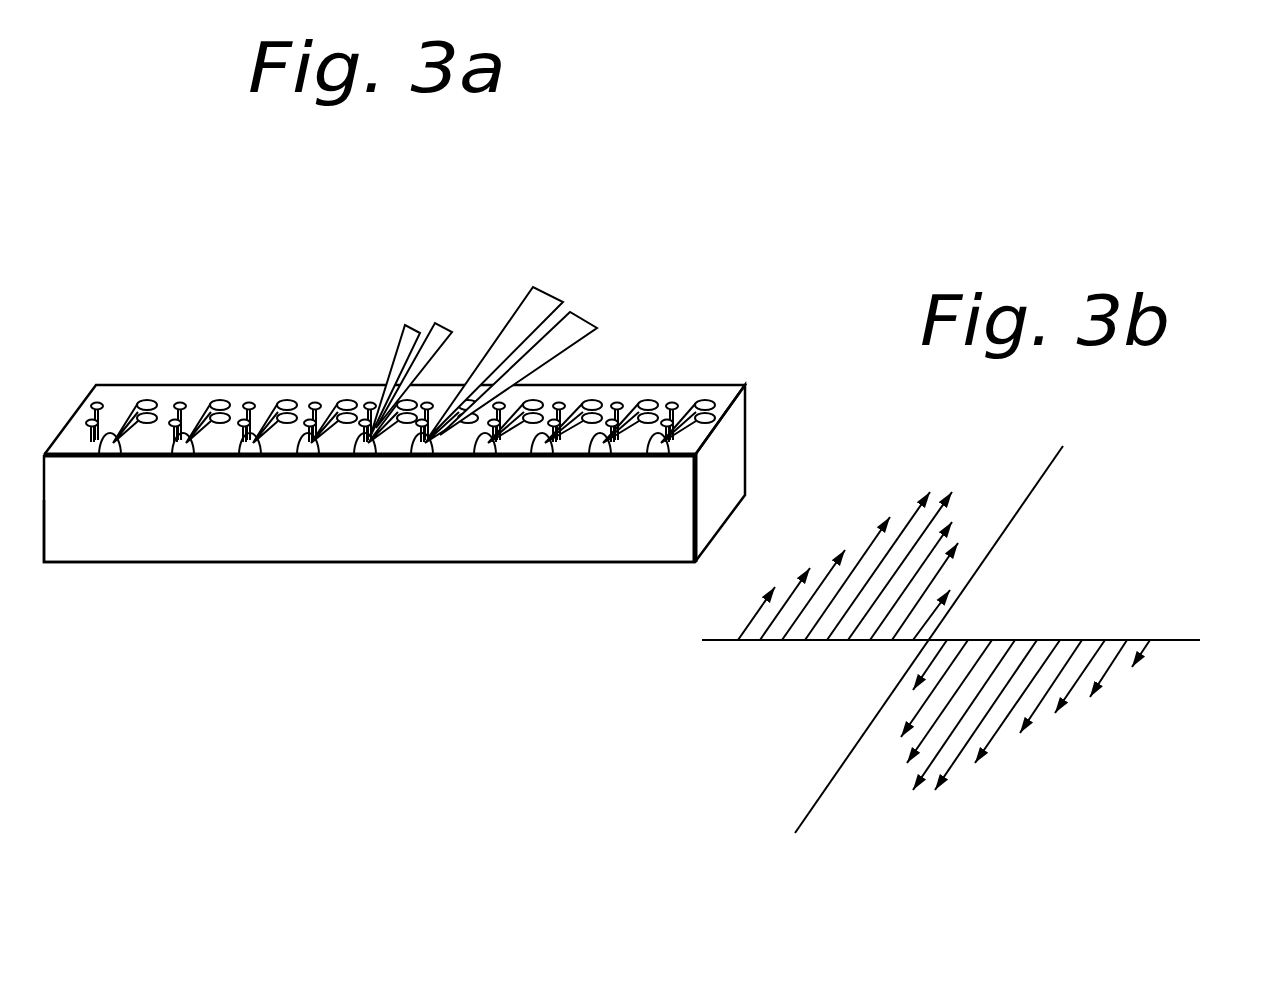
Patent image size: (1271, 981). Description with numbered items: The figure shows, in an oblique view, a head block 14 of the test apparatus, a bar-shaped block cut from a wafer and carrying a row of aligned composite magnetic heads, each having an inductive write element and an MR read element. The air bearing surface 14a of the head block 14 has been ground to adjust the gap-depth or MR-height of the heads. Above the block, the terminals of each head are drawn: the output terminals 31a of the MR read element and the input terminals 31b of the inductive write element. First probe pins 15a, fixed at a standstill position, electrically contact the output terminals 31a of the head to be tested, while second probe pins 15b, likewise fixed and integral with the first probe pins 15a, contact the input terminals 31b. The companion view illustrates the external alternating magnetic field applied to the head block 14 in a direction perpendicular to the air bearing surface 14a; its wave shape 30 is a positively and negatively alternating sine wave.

In FIG. 3A, the head block 14 is at (737, 447).
In FIG. 3A, the air bearing surface (ABS) 14a is at (360, 535).
In FIG. 3A, the first probe pins 15a is at (577, 323).
In FIG. 3A, the second probe pins 15b is at (440, 330).
In FIG. 3B, the wave shape of the external magnetic field 30 is at (1042, 765).
In FIG. 3A, the output terminals 31a is at (291, 406).
In FIG. 3A, the input terminals 31b is at (248, 402).